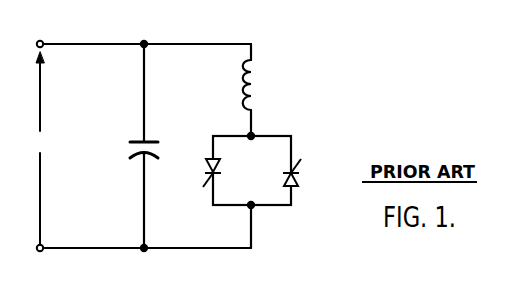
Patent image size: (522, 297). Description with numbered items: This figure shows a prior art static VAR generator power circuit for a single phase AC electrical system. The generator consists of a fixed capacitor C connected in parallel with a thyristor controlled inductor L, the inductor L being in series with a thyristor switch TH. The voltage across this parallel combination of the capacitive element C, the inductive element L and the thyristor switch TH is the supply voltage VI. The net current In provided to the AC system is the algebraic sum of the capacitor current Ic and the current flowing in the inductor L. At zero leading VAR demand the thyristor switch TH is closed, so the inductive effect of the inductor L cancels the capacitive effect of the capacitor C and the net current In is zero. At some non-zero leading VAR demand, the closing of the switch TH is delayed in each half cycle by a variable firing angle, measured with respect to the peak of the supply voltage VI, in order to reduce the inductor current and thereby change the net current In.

The voltage across the parallel combination VI is at (39, 148).
The net current In is at (103, 32).
The fixed capacitor C is at (128, 152).
The capacitor current Ic is at (134, 119).
The thyristor controlled inductor L is at (257, 84).
The thyristor switch TH is at (265, 178).